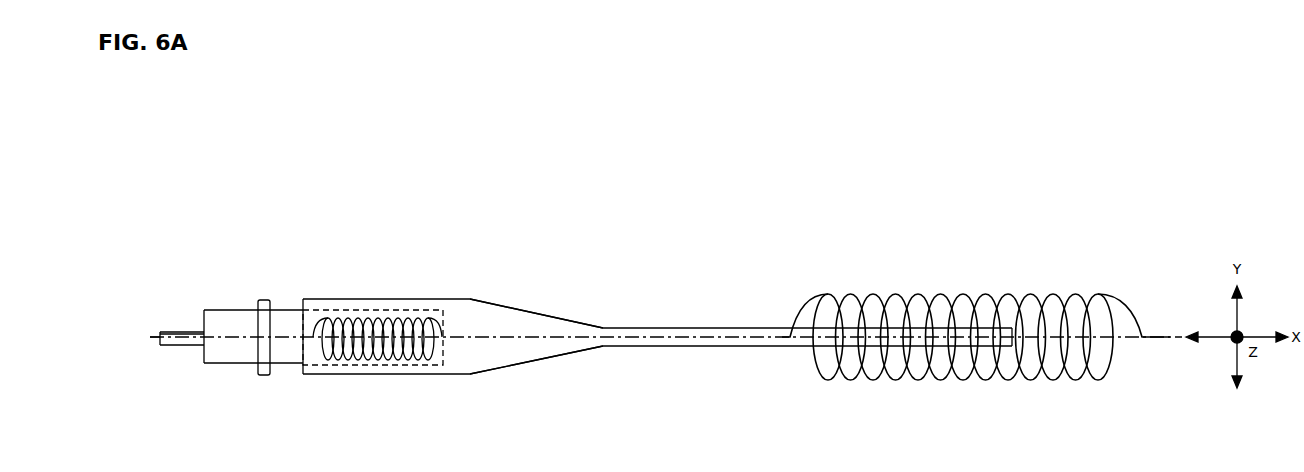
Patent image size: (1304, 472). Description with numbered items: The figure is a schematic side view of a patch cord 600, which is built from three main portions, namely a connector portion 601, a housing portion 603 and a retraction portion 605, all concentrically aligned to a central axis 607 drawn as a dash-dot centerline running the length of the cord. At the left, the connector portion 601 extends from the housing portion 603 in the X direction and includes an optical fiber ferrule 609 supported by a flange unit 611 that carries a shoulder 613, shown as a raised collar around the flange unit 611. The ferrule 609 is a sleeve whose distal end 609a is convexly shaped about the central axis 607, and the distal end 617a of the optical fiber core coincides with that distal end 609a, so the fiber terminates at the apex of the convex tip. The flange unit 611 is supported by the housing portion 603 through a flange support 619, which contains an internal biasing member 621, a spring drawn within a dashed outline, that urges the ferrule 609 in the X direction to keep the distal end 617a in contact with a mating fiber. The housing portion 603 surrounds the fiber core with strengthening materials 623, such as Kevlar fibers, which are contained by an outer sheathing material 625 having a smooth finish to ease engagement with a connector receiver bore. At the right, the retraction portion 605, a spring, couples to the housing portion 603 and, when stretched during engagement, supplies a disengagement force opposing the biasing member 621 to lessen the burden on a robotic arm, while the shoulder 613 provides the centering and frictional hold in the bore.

The patch cord 600 is at (404, 124).
The connector portion 601 is at (305, 206).
The housing portion 603 is at (785, 206).
The retraction portion 605 is at (792, 206).
The central axis 607 is at (152, 338).
The optical fiber ferrule 609 is at (193, 347).
The distal end of ferrule 609a is at (160, 341).
The flange unit 611 is at (240, 364).
The shoulder 613 is at (264, 300).
The distal end of optical fiber core 617a is at (158, 335).
The flange support 619 is at (310, 375).
The internal biasing member 621 is at (383, 356).
The strengthening materials 623 is at (475, 318).
The outer sheathing material 625 is at (475, 376).